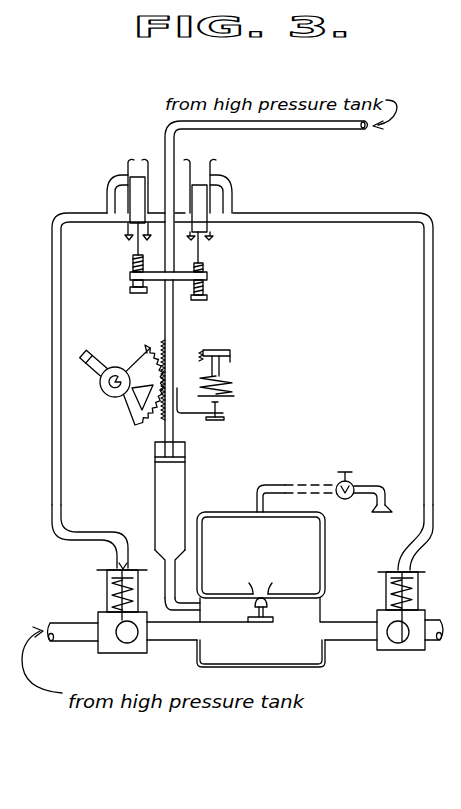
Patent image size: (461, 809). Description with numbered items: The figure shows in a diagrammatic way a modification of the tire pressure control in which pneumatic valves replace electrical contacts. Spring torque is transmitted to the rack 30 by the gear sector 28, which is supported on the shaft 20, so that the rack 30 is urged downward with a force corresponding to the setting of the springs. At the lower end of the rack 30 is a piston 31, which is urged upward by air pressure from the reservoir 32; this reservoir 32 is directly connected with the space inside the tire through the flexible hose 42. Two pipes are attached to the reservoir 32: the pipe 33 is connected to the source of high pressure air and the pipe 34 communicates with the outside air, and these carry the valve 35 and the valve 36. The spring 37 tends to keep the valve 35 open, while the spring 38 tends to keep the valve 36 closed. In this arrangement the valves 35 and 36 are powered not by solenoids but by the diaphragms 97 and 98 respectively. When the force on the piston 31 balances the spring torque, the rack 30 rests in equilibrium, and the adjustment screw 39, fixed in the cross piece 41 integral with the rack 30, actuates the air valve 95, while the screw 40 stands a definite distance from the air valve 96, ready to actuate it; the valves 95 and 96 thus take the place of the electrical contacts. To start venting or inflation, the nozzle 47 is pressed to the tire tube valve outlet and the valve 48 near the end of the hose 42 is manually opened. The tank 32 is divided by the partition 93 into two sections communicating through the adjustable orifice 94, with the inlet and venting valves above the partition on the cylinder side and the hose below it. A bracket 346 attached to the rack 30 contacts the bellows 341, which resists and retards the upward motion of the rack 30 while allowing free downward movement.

The shaft 20 is at (113, 386).
The gear sector 28 is at (136, 420).
The rack 30 is at (174, 318).
The piston 31 is at (185, 458).
The reservoir 32 is at (325, 548).
The pipe 33 is at (72, 642).
The pipe 34 is at (432, 652).
The valve 35 is at (147, 648).
The valve 36 is at (395, 652).
The spring 37 is at (110, 592).
The spring 38 is at (390, 592).
The adjustment screw 39 is at (133, 262).
The screw 40 is at (206, 268).
The cross piece 41 is at (208, 281).
The flexible hose 42 is at (274, 486).
The nozzle 47 is at (382, 512).
The valve 48 is at (352, 482).
The partition 93 is at (230, 595).
The adjustable orifice 94 is at (267, 586).
The air valve 95 is at (126, 166).
The air valve 96 is at (214, 171).
The diaphragm 97 is at (126, 565).
The diaphragm 98 is at (406, 566).
The bellows 341 is at (234, 384).
The bracket 346 is at (198, 416).